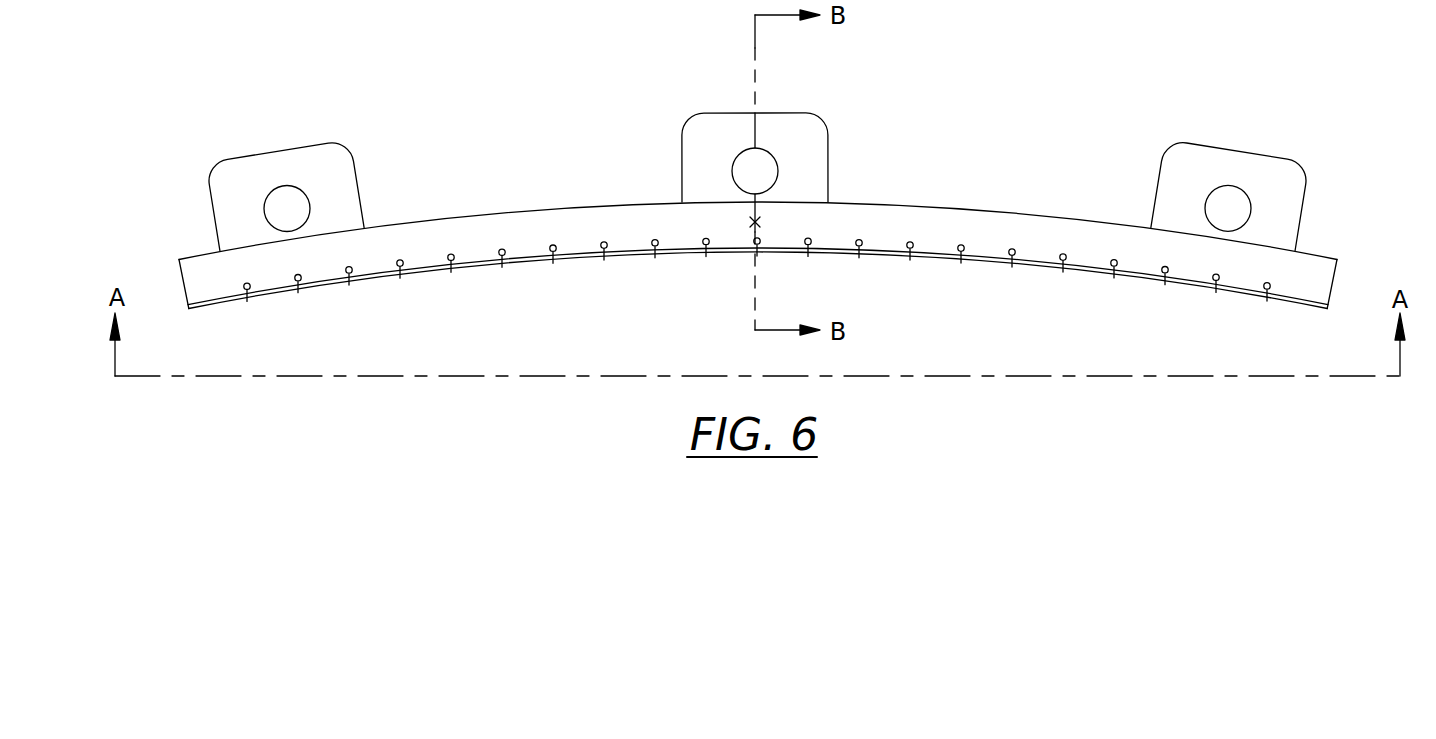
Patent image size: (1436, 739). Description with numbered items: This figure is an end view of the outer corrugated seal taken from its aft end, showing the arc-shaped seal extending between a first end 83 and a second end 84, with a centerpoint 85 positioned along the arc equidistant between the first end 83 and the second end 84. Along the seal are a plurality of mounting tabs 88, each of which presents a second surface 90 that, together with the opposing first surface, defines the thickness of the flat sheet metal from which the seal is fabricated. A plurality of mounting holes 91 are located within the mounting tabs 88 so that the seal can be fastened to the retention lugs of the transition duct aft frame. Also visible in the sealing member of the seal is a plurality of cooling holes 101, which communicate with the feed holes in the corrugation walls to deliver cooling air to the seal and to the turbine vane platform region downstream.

The first end of curved support 83 is at (179, 284).
The second end of curved support 84 is at (1337, 284).
The center point 85 is at (761, 222).
The mounting block 88 is at (226, 172).
The mounting surface 90 is at (232, 201).
The mounting aperture 91 is at (279, 221).
The light sources 101 is at (247, 291).